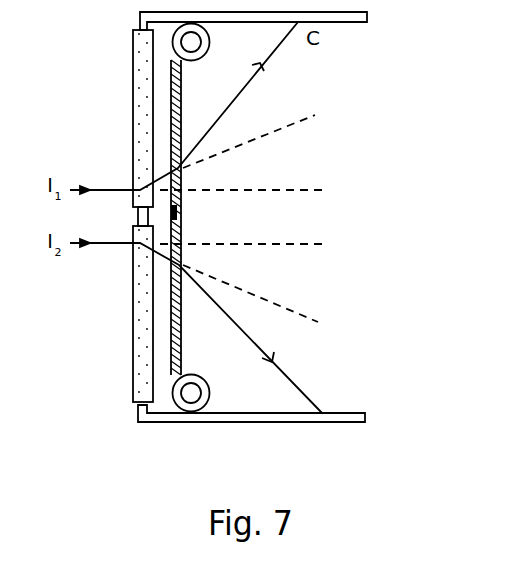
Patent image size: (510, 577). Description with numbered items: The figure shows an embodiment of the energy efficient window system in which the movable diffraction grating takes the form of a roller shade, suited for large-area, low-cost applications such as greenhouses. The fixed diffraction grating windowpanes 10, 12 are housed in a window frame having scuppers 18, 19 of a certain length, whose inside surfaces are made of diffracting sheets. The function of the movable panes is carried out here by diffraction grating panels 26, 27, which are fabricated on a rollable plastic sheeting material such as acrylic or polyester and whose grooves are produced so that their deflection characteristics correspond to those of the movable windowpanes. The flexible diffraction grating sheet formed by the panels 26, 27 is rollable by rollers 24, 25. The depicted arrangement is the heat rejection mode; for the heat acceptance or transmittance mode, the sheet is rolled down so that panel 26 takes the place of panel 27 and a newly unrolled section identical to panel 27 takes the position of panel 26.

The fixed diffraction grating windowpane 10 is at (132, 65).
The fixed diffraction grating windowpane 12 is at (132, 353).
The scupper 18 is at (347, 422).
The scupper 19 is at (340, 23).
The roller 24 is at (209, 40).
The roller 25 is at (210, 393).
The diffraction grating panel 26 is at (182, 108).
The diffraction grating panel 27 is at (180, 318).